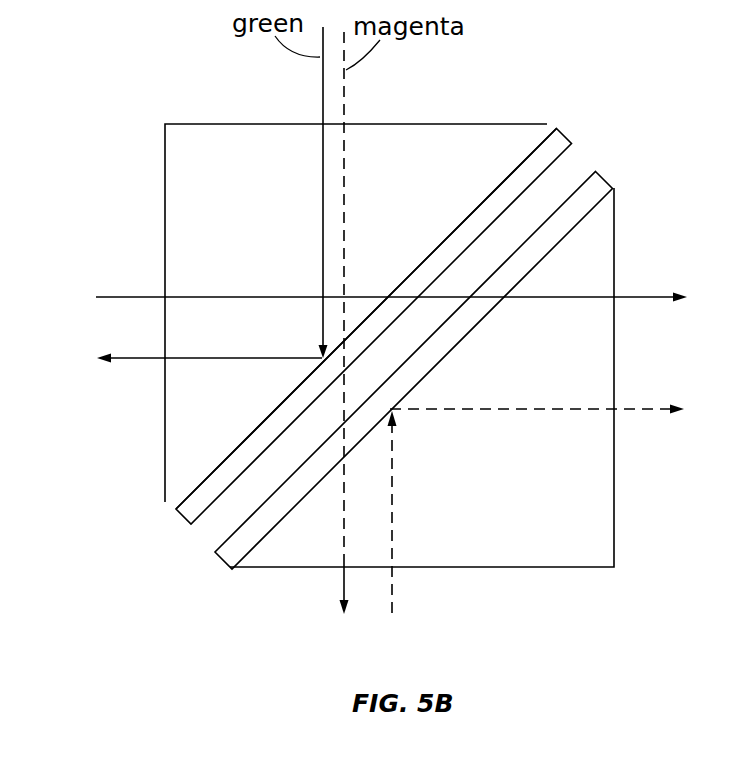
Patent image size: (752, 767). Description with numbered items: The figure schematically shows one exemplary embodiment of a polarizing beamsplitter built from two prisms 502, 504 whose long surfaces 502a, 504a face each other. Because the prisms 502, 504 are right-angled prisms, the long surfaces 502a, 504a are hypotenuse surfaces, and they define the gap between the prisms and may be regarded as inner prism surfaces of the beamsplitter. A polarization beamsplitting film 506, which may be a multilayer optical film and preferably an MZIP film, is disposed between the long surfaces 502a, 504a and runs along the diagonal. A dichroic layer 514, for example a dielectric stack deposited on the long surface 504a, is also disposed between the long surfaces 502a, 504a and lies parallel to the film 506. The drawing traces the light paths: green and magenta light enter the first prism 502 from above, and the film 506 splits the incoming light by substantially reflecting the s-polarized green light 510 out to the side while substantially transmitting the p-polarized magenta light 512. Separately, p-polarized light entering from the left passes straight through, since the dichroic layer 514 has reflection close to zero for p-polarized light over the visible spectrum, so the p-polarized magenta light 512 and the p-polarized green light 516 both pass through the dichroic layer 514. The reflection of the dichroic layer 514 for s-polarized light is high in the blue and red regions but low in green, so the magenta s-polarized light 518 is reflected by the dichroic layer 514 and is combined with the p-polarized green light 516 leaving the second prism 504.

The prism 502 is at (205, 124).
The long surface of prism 502a is at (515, 155).
The polarization beamsplitting film 506 is at (558, 133).
The dichroic layer 514 is at (600, 173).
The long surface of prism 504a is at (567, 233).
The prism 504 is at (616, 522).
The p-polarized green light 516 is at (133, 296).
The s-polarized green light 510 is at (140, 360).
The p-polarized magenta light 512 is at (345, 552).
The magenta s-polarized light 518 is at (393, 580).